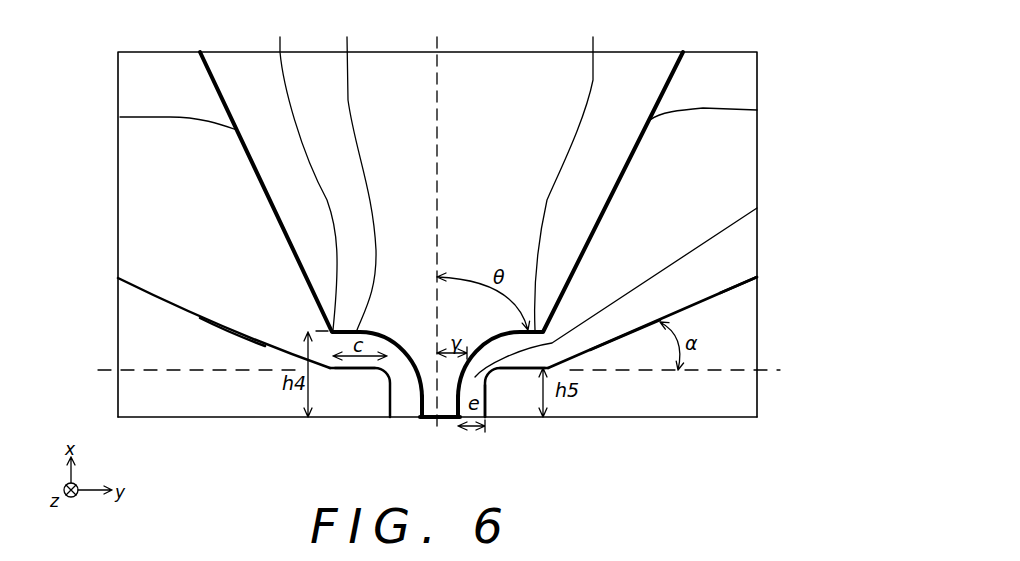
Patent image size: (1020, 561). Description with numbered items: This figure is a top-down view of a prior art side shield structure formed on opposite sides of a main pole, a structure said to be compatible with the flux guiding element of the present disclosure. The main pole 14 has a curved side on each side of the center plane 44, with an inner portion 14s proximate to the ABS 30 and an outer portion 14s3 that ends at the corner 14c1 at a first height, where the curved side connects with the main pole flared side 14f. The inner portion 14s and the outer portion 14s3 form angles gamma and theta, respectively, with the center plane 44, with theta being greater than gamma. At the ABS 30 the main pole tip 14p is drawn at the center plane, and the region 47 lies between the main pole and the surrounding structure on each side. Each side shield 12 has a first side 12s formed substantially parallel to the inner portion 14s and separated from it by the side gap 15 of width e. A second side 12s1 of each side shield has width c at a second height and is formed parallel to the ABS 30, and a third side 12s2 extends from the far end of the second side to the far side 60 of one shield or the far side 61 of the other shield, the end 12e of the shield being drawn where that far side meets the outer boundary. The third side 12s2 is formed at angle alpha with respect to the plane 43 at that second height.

The main pole 14 is at (510, 80).
The corner 14c1 is at (437, 171).
The outer portion of main pole curved side 14s3 is at (347, 171).
The main pole flared side 14f is at (120, 117).
The inner portion of main pole curved side 14s is at (420, 403).
The main pole tip end surface 14p is at (430, 418).
The side shield 12 is at (130, 333).
The first side of side shield 12s is at (487, 397).
The second side of side shield 12s1 is at (357, 370).
The third side of side shield 12s2 is at (253, 338).
The magnetic layer end 12e is at (757, 274).
The side gap 15 is at (757, 208).
The ABS 30 is at (118, 417).
The plane 43 is at (441, 373).
The center plane 44 is at (441, 240).
The gap region 47 is at (128, 152).
The far side of side shield 60 is at (118, 297).
The far side of side shield 61 is at (757, 290).